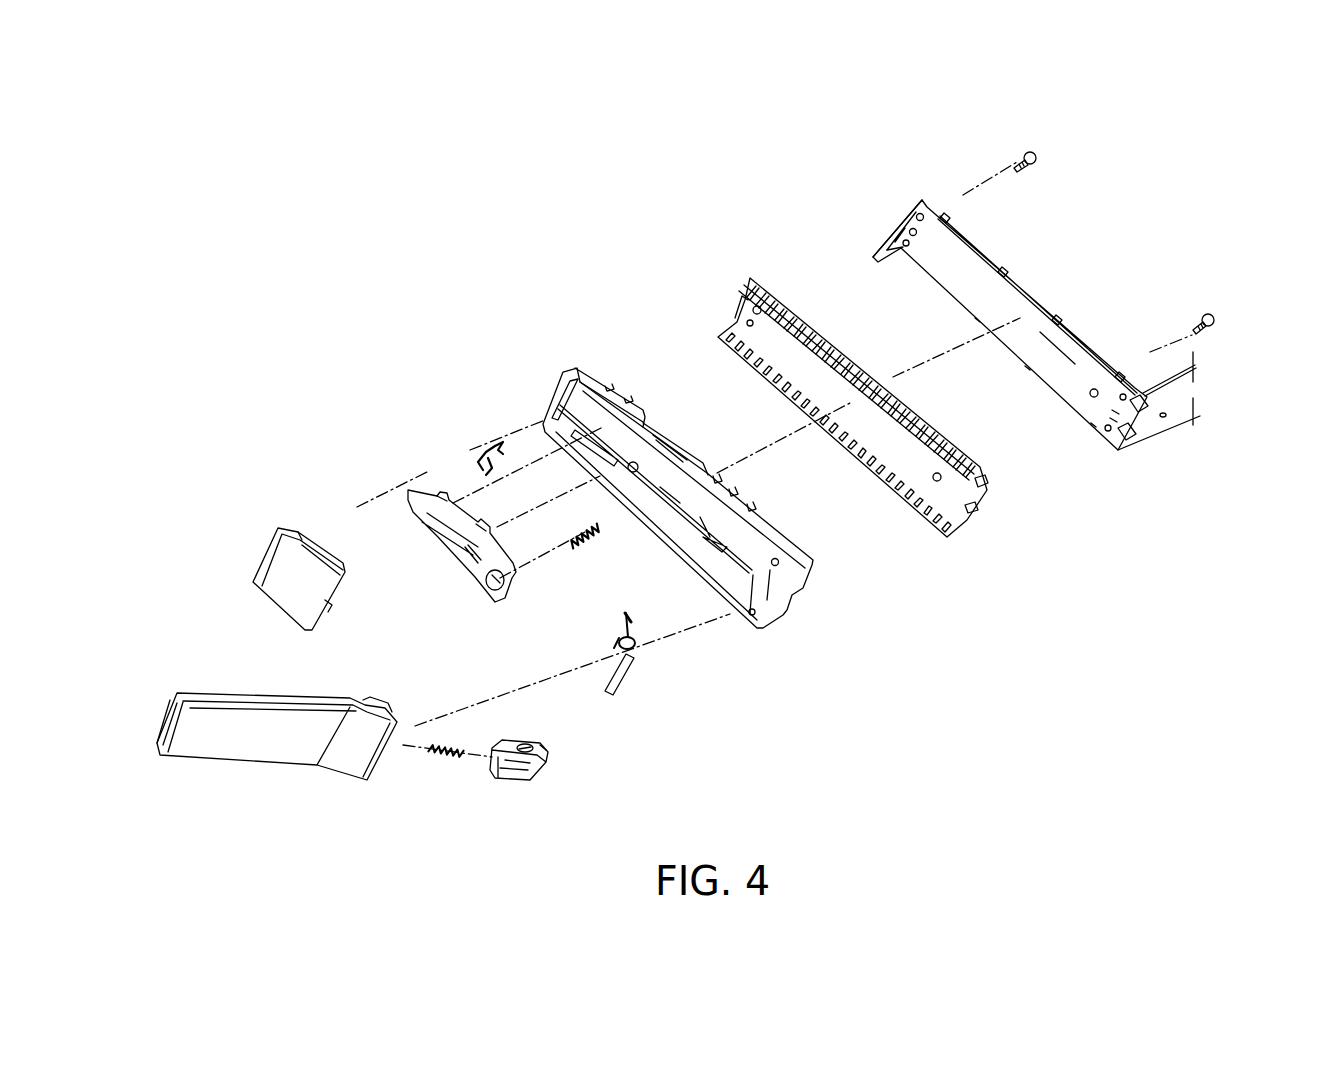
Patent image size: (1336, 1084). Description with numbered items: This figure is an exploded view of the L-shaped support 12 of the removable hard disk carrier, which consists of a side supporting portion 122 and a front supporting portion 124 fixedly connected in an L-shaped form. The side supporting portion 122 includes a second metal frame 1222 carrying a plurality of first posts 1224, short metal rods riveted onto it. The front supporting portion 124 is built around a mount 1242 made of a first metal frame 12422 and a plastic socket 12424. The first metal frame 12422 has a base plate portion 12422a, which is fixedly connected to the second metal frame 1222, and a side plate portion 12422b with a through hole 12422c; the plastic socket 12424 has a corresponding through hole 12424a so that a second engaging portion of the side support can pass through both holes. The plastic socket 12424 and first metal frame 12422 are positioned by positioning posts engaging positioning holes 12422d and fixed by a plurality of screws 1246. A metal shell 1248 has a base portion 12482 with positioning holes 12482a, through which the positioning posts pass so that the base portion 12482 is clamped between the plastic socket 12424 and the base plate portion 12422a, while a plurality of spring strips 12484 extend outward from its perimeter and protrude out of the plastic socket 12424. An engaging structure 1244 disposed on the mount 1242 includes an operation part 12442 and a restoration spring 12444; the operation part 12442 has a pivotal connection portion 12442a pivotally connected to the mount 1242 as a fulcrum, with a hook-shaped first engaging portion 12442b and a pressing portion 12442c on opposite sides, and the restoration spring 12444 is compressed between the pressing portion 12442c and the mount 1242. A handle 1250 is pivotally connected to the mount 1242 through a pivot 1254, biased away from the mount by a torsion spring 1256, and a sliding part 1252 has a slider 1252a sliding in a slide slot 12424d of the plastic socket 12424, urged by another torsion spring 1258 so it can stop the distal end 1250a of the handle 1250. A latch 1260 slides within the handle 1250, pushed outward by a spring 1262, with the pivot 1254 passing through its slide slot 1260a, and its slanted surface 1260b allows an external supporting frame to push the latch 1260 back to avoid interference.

The L-shaped support 12 is at (916, 412).
The side supporting portion 122 is at (1193, 504).
The front supporting portion 124 is at (916, 388).
The second metal frame 1222 is at (1185, 402).
The first posts 1224 is at (1165, 418).
The mount 1242 is at (916, 388).
The first metal frame 12422 is at (1044, 310).
The base plate portion 12422a is at (1073, 362).
The side plate portion 12422b is at (897, 205).
The through hole 12422c is at (888, 225).
The positioning holes 12422d is at (928, 215).
The plastic socket 12424 is at (736, 481).
The through hole 12424a is at (580, 370).
The slide slot 12424d is at (627, 413).
The engaging structure 1244 is at (478, 508).
The operation part 12442 is at (439, 486).
The pivotal connection portion 12442a is at (476, 530).
The first engaging portion 12442b is at (438, 497).
The pressing portion 12442c is at (498, 580).
The restoration spring 12444 is at (563, 580).
The screws 1246 is at (1038, 158).
The metal shell 1248 is at (874, 410).
The base portion 12482 is at (900, 447).
The positioning holes 12482a is at (753, 332).
The spring strips 12484 is at (743, 322).
The handle 1250 is at (238, 734).
The distal end 1250a is at (160, 723).
The sliding part 1252 is at (341, 602).
The slider 1252a is at (338, 560).
The pivot 1254 is at (617, 688).
The torsion spring 1256 is at (637, 642).
The torsion spring 1258 is at (497, 427).
The latch 1260 is at (568, 776).
The slide slot 1260a is at (525, 745).
The slanted surface 1260b is at (612, 752).
The spring 1262 is at (443, 762).